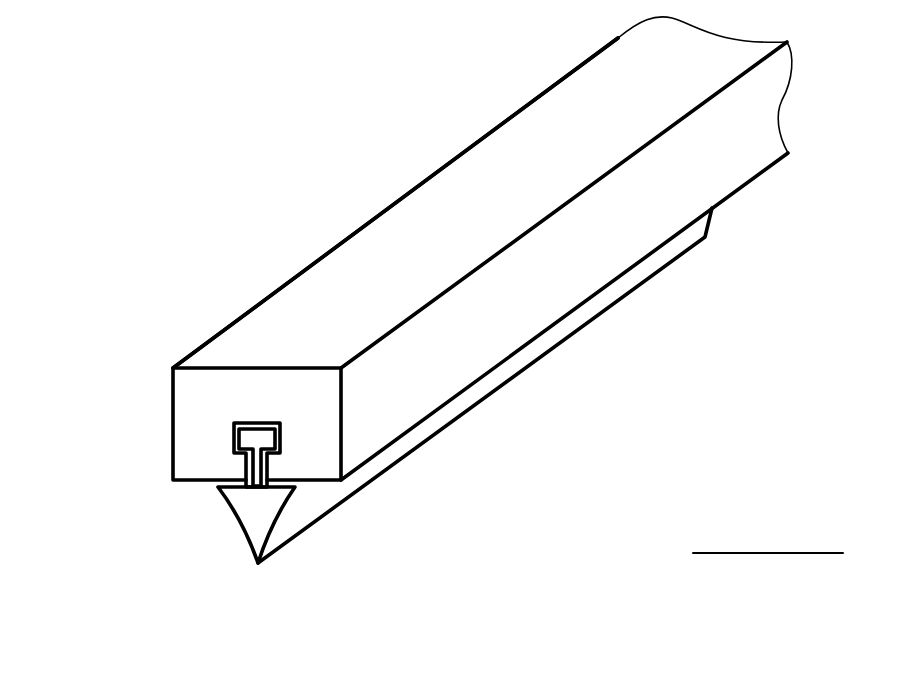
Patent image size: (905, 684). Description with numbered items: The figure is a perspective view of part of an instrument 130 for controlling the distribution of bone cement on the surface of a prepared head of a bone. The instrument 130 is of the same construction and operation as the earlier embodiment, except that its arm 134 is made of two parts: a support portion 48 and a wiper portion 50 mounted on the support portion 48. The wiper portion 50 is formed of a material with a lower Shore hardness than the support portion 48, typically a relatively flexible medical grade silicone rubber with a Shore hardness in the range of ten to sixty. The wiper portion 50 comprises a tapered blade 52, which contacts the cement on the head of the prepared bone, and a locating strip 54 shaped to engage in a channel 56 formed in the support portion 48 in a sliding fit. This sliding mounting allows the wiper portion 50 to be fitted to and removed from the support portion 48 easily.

The support portion 48 is at (523, 177).
The wiper portion 50 is at (325, 514).
The tapered blade 52 is at (278, 535).
The locating strip 54 is at (265, 442).
The channel 56 is at (233, 442).
The instrument 130 is at (347, 148).
The arm 134 is at (333, 233).